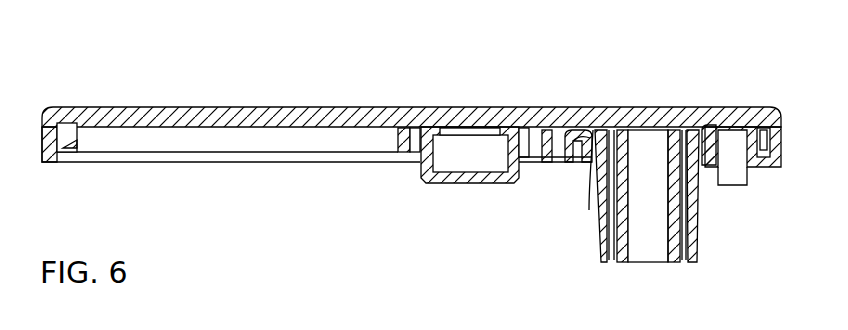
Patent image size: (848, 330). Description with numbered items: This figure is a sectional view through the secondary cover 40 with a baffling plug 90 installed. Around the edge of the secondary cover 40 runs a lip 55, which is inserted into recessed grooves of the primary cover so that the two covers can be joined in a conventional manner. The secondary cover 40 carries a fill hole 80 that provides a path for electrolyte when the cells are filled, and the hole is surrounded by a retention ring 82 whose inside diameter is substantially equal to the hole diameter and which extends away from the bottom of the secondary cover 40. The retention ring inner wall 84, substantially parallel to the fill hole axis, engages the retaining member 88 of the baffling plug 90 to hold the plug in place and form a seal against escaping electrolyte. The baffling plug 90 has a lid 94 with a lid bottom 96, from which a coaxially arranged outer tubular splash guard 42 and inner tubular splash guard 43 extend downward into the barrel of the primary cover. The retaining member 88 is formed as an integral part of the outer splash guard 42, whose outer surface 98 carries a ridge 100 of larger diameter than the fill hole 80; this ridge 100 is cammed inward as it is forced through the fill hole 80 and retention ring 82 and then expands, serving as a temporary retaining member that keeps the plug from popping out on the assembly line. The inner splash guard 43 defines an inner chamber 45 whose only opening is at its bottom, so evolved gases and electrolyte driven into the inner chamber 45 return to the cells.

The secondary cover 40 is at (480, 101).
The outer tubular splash guard 42 is at (600, 200).
The inner tubular splash guard 43 is at (662, 246).
The inner chamber 45 is at (643, 222).
The lip 55 is at (42, 165).
The fill hole 80 is at (728, 134).
The retention ring 82 is at (545, 170).
The retention ring inner wall 84 is at (573, 167).
The retaining member 88 is at (590, 207).
The baffling plug 90 is at (722, 262).
The lid 94 is at (685, 107).
The lid bottom 96 is at (652, 132).
The outer surface 98 is at (700, 230).
The ridge 100 is at (700, 212).